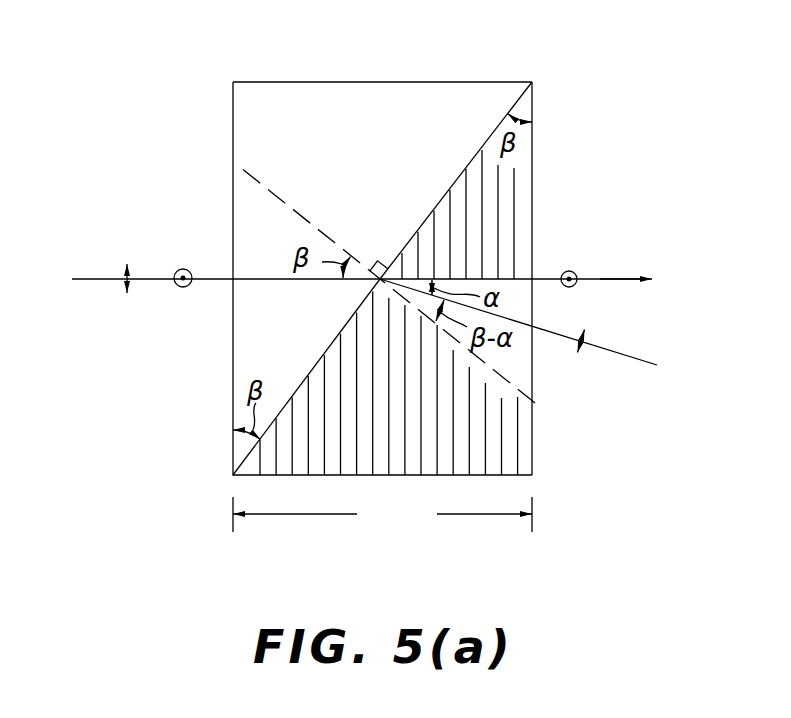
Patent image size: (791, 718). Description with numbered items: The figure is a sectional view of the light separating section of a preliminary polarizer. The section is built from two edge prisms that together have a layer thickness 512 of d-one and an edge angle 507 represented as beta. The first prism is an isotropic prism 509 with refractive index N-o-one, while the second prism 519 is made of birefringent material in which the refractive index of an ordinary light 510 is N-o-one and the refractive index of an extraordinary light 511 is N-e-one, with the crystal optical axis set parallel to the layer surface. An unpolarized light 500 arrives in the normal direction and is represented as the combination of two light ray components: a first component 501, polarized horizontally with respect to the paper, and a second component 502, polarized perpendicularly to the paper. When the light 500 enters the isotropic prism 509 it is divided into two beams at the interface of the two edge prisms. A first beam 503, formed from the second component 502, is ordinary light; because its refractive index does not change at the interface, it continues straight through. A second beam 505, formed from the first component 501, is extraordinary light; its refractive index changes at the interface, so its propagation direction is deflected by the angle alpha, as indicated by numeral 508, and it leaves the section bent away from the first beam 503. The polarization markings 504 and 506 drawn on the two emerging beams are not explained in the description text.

The unpolarized light 500 is at (87, 278).
The first component 501 is at (124, 289).
The second component 502 is at (185, 289).
The first beam 503 is at (620, 278).
The polarization of transmitted light 504 is at (576, 272).
The second beam 505 is at (635, 360).
The polarization of refracted light 506 is at (586, 334).
The edge angle 507 is at (489, 133).
The deflection by angle alpha 508 is at (524, 294).
The isotropic prism 509 is at (341, 116).
The ordinary light refractive index 510 is at (503, 443).
The extraordinary light refractive index 511 is at (389, 312).
The layer thickness 512 is at (382, 528).
The second prism 519 is at (311, 453).